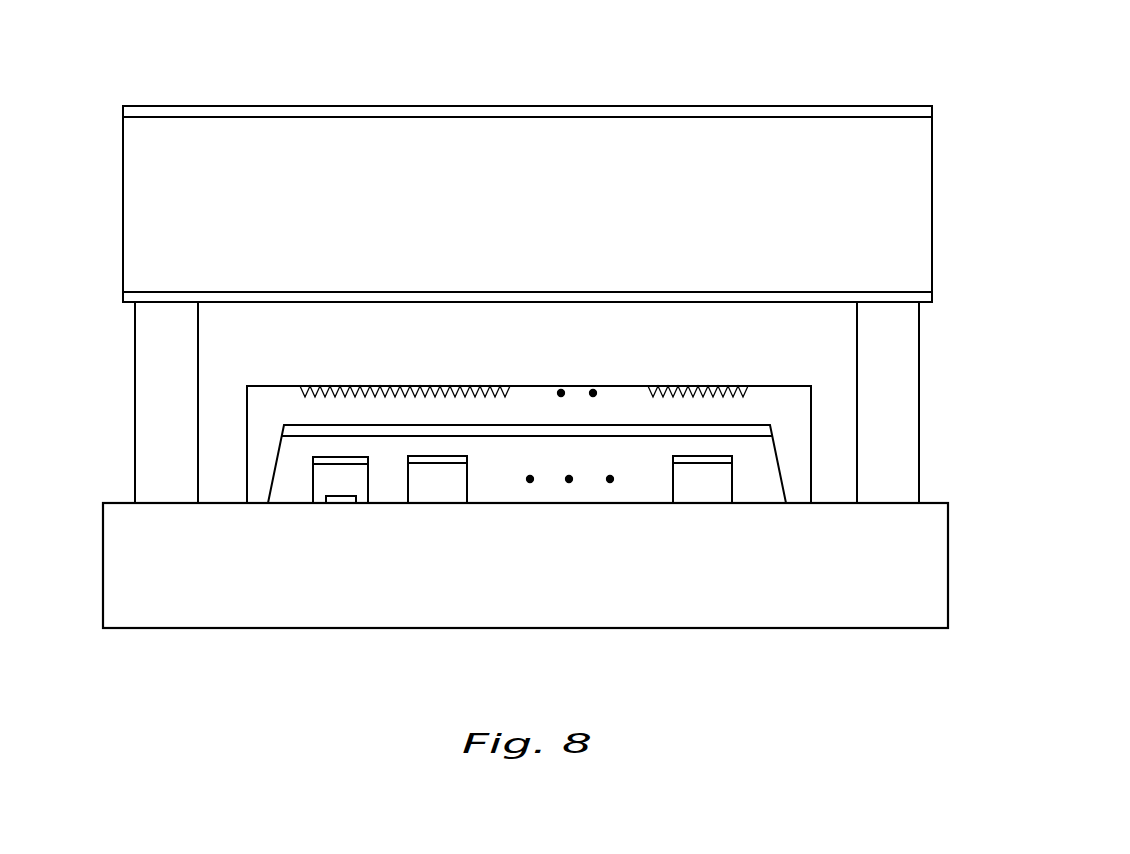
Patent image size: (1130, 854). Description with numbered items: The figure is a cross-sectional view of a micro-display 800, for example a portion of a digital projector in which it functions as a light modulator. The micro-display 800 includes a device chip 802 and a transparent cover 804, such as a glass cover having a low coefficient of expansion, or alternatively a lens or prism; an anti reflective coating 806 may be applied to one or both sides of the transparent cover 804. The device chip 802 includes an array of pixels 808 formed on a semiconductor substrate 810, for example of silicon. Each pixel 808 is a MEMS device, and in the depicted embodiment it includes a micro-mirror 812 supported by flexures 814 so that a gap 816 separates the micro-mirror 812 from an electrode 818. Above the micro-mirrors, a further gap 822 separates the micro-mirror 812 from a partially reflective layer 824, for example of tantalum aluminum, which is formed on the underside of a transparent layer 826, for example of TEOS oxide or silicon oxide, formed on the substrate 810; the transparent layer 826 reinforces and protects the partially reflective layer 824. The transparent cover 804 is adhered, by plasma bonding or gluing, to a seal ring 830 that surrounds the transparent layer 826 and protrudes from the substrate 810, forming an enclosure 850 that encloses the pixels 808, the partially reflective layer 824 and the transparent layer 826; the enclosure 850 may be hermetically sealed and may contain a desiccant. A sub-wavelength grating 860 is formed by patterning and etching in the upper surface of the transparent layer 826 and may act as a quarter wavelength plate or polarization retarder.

The micro-display 800 is at (905, 60).
The device chip 802 is at (1021, 430).
The transparent cover 804 is at (540, 206).
The anti reflective coating 806 is at (202, 108).
The pixels 808 is at (478, 492).
The semiconductor substrate 810 is at (885, 584).
The micro-mirror 812 is at (317, 462).
The flexures 814 is at (310, 495).
The gap 816 is at (358, 479).
The electrode 818 is at (337, 503).
The gap 822 is at (325, 446).
The partially reflective layer 824 is at (293, 432).
The transparent layer 826 is at (768, 405).
The seal ring 830 is at (145, 353).
The enclosure 850 is at (788, 348).
The sub-wavelength grating 860 is at (445, 385).